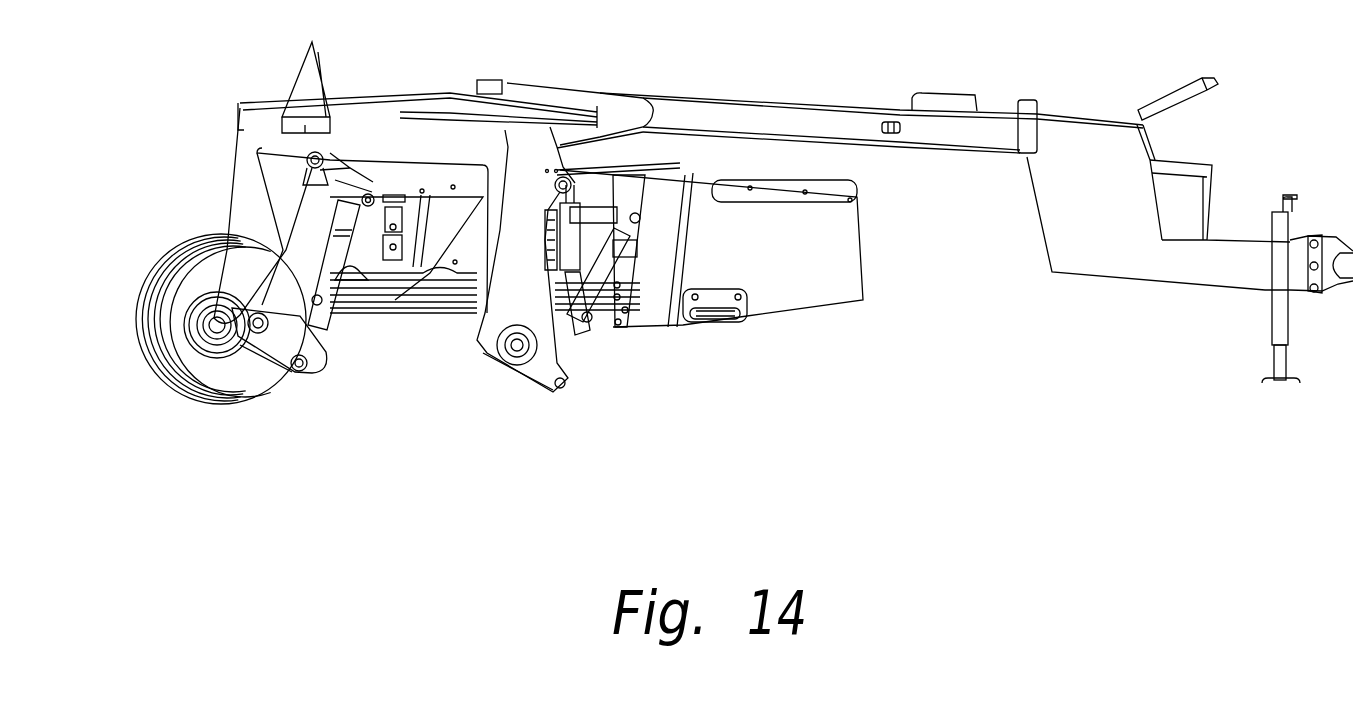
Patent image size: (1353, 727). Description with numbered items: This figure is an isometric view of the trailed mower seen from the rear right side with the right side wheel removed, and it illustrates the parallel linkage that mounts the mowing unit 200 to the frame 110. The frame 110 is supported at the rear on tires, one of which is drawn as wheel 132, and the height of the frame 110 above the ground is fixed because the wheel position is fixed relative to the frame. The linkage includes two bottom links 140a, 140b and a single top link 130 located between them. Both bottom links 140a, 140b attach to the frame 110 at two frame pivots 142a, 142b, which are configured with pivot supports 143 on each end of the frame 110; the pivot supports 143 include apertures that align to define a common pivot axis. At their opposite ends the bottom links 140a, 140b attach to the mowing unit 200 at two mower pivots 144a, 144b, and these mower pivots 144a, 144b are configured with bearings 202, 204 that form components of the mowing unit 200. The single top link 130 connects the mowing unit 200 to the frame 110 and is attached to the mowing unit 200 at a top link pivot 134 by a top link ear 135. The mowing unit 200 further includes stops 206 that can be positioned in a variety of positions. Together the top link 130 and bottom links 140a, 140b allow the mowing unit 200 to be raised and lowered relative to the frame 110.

The frame 110 is at (475, 152).
The top link 130 is at (290, 240).
The wheel 132 is at (230, 323).
The top link pivot 134 is at (307, 160).
The top link ear 135 is at (367, 180).
The left bottom link 140a is at (345, 280).
The right bottom link 140b is at (630, 330).
The frame pivot 142a is at (316, 378).
The frame pivot 142b is at (572, 385).
The pivot supports 143 is at (293, 372).
The mower pivot 144a is at (362, 300).
The mower pivot 144b is at (737, 323).
The mowing unit 200 is at (803, 241).
The bearing 202 is at (640, 219).
The bearing 204 is at (375, 195).
The stops 206 is at (690, 327).